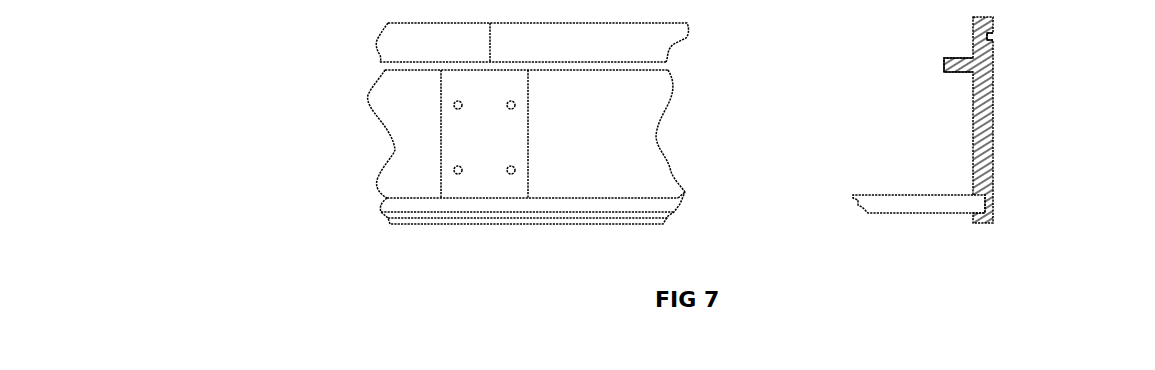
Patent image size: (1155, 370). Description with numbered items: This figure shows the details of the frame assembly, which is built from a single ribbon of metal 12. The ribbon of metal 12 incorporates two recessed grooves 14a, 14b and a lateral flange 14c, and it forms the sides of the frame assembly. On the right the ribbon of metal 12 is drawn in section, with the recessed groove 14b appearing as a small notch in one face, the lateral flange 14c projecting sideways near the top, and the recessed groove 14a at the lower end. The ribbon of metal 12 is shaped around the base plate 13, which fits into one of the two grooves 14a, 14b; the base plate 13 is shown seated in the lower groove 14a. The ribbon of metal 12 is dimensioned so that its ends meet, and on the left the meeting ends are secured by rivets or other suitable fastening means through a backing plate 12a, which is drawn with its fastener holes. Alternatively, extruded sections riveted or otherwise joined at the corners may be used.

The ribbon of metal 12 is at (999, 120).
The backing plate 12a is at (432, 127).
The base plate 13 is at (688, 207).
The recessed groove 14a is at (967, 192).
The recessed groove 14b is at (998, 38).
The lateral flange 14c is at (951, 72).